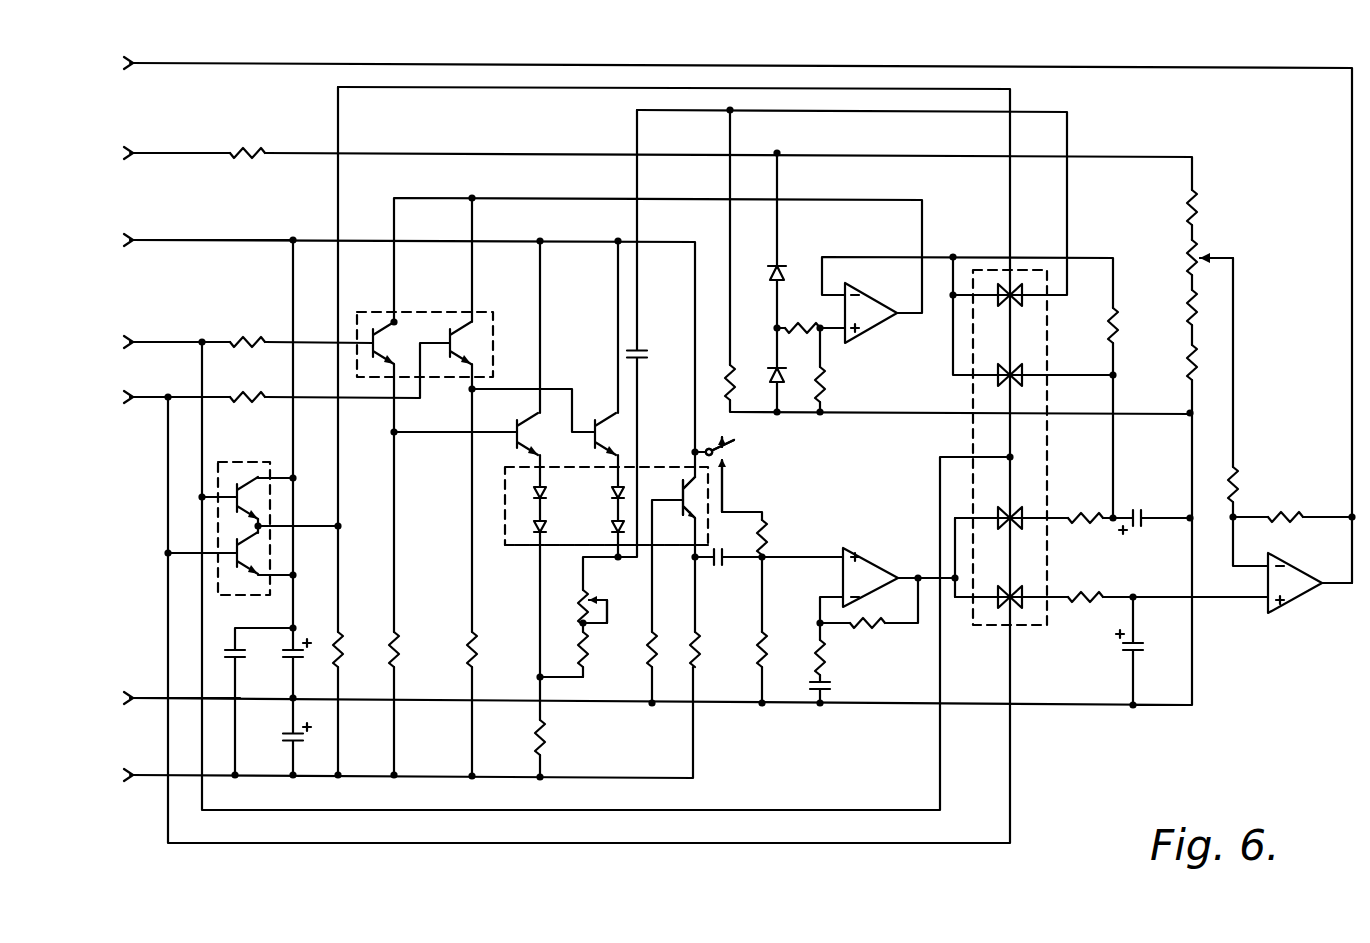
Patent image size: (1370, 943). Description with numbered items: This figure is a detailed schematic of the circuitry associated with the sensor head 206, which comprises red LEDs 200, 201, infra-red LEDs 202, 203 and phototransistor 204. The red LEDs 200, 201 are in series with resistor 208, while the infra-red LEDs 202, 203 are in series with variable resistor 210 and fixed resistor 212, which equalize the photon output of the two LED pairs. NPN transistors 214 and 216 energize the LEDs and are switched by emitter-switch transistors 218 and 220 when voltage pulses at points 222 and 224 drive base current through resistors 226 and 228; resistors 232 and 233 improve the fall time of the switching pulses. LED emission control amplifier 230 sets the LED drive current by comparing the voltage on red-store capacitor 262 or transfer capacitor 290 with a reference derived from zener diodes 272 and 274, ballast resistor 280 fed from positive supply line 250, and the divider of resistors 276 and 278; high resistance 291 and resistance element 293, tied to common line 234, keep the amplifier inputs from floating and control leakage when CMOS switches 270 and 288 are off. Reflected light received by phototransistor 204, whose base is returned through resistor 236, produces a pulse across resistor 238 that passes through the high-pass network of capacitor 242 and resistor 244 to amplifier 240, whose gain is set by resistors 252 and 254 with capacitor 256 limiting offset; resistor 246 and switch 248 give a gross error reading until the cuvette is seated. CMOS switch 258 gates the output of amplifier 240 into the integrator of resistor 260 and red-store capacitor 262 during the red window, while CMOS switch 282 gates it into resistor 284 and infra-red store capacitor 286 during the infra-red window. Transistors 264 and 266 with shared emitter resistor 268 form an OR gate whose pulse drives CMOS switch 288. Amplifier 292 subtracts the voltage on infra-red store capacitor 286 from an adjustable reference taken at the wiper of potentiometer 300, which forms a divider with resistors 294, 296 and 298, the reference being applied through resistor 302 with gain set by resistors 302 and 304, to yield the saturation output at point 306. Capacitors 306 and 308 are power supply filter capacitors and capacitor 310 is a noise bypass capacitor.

The red LED 200 is at (528, 492).
The red LED 201 is at (528, 526).
The infra-red LED 202 is at (610, 493).
The infra-red LED 203 is at (610, 526).
The phototransistor 204 is at (683, 478).
The sensor head 206 is at (508, 547).
The resistor 208 is at (548, 742).
The variable resistor 210 is at (598, 575).
The fixed resistor 212 is at (592, 662).
The NPN transistor 214 is at (532, 420).
The NPN transistor 216 is at (608, 414).
The NPN transistor 218 is at (385, 318).
The NPN transistor 220 is at (462, 318).
The point 222 is at (162, 341).
The point 224 is at (156, 396).
The resistor 226 is at (258, 338).
The resistor 228 is at (252, 396).
The LED emission control amplifier 230 is at (882, 323).
The resistor 232 is at (400, 652).
The resistor 233 is at (478, 650).
The common line 234 is at (150, 697).
The resistor 236 is at (648, 648).
The resistor 238 is at (702, 650).
The amplifier 240 is at (880, 533).
The capacitor 242 is at (720, 565).
The resistor 244 is at (768, 650).
The resistor 246 is at (770, 535).
The switch 248 is at (734, 455).
The positive supply voltage line 250 is at (178, 224).
The resistor 252 is at (828, 652).
The resistor 254 is at (878, 628).
The capacitor 256 is at (832, 686).
The CMOS analog switch 258 is at (1000, 528).
The resistor 260 is at (1082, 514).
The red-store capacitor 262 is at (1137, 509).
The NPN transistor 264 is at (250, 470).
The NPN transistor 266 is at (240, 584).
The resistor 268 is at (345, 652).
The CMOS switch 270 is at (1025, 350).
The zener diode 272 is at (786, 264).
The zener diode 274 is at (768, 375).
The resistor 276 is at (822, 310).
The resistor 278 is at (828, 378).
The resistor 280 is at (251, 152).
The CMOS switch 282 is at (1024, 573).
The resistor 284 is at (1084, 592).
The infra-red store capacitor 286 is at (1124, 650).
The CMOS switch 288 is at (1000, 306).
The transfer capacitor 290 is at (648, 350).
The high resistance 291 is at (1108, 322).
The amplifier 292 is at (1308, 598).
The high resistance element 293 is at (722, 382).
The resistor 294 is at (1186, 206).
The resistor 296 is at (1186, 306).
The resistor 298 is at (1186, 360).
The potentiometer 300 is at (1186, 258).
The resistor 302 is at (1240, 478).
The resistor 304 is at (1296, 500).
The output point 306 is at (166, 63).
The capacitor 308 is at (284, 740).
The capacitor 310 is at (224, 652).